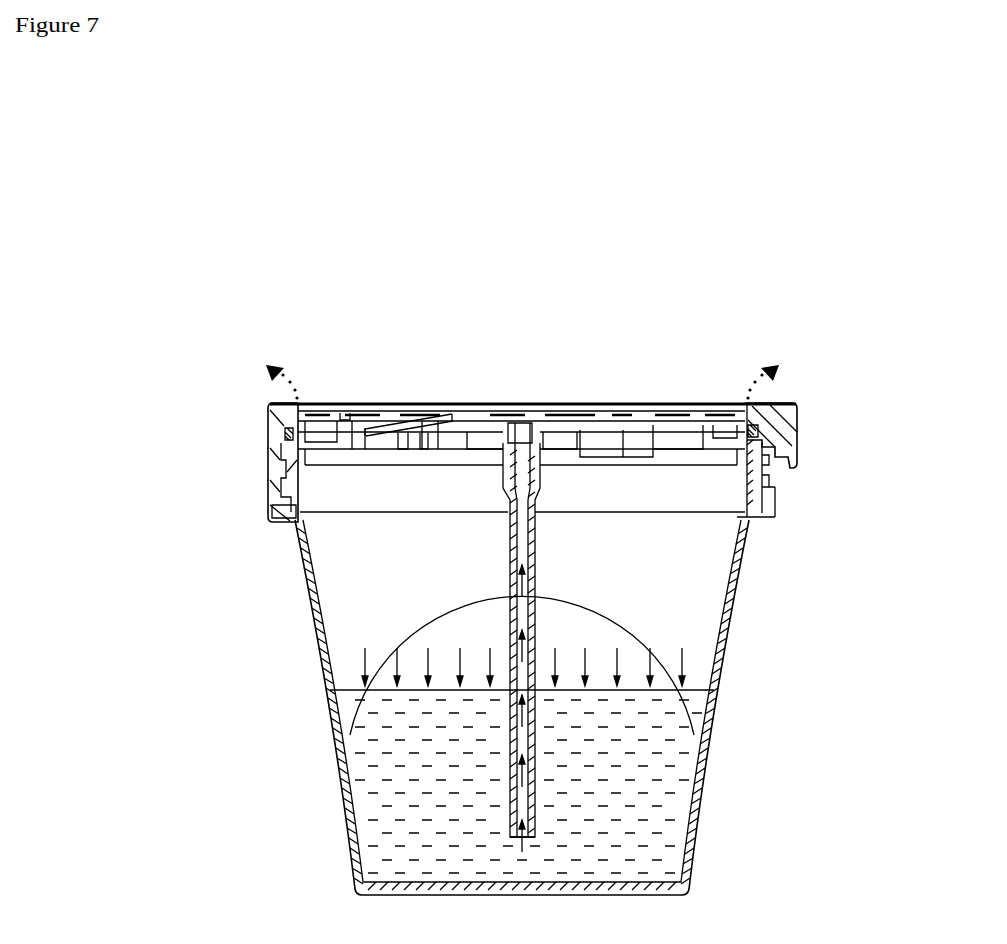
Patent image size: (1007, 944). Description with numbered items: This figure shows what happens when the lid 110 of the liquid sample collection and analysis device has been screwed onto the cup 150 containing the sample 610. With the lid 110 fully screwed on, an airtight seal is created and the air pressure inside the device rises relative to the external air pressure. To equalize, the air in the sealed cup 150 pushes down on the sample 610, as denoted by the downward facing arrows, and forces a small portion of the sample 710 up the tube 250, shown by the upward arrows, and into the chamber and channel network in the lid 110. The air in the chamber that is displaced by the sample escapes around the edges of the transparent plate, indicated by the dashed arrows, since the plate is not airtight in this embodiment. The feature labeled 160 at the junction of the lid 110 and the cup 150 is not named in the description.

The lid 110 is at (795, 426).
The cap seal / skirt 160 is at (275, 506).
The portion of the sample 710 is at (535, 540).
The tube 250 is at (530, 568).
The cup 150 is at (732, 630).
The sample 610 is at (647, 798).